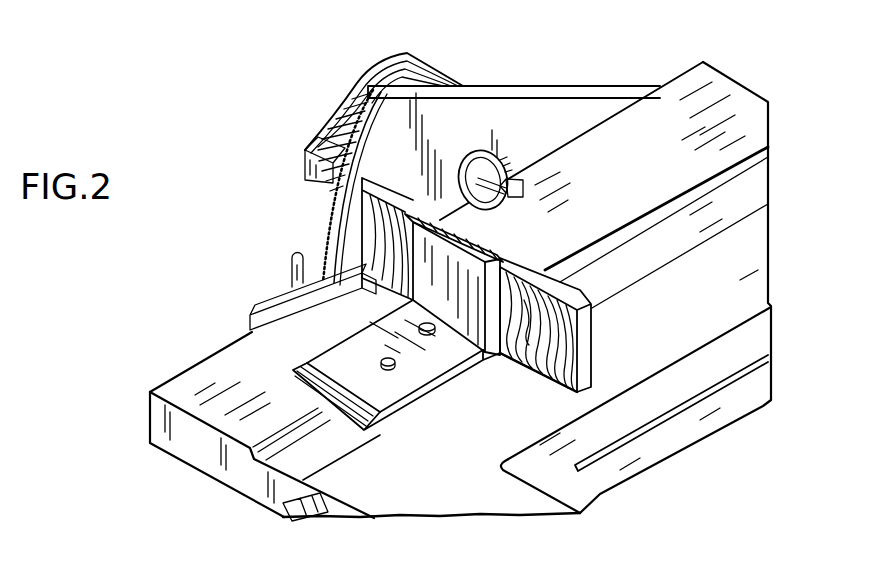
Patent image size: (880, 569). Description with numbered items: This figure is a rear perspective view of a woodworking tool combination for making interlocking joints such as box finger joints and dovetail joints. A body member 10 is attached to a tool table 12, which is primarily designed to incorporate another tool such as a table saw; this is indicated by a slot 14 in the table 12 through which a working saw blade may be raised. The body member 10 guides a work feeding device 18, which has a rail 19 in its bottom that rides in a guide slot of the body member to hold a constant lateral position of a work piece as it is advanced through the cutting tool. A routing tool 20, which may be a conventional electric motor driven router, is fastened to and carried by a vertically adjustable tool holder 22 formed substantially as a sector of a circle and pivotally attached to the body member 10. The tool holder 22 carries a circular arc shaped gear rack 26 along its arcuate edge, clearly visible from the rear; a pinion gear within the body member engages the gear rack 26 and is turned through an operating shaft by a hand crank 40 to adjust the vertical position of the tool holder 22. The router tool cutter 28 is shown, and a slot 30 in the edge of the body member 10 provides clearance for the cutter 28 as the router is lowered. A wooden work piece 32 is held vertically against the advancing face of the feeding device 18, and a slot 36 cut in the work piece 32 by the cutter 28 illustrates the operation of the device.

The body member 10 is at (713, 78).
The tool table 12 is at (510, 449).
The slot 14 is at (671, 408).
The work feeding device 18 is at (465, 222).
The rail 19 is at (341, 417).
The routing tool 20 is at (420, 64).
The tool holder 22 is at (526, 87).
The gear rack 26 is at (328, 200).
The router tool cutter 28 is at (533, 150).
The slot 30 is at (537, 174).
The work piece 32 is at (590, 352).
The slot 36 is at (360, 296).
The hand crank 40 is at (292, 270).